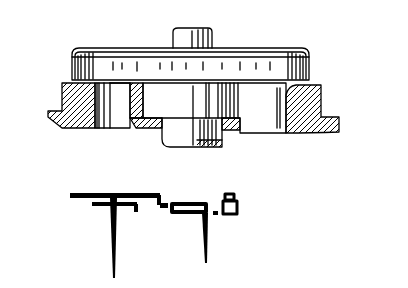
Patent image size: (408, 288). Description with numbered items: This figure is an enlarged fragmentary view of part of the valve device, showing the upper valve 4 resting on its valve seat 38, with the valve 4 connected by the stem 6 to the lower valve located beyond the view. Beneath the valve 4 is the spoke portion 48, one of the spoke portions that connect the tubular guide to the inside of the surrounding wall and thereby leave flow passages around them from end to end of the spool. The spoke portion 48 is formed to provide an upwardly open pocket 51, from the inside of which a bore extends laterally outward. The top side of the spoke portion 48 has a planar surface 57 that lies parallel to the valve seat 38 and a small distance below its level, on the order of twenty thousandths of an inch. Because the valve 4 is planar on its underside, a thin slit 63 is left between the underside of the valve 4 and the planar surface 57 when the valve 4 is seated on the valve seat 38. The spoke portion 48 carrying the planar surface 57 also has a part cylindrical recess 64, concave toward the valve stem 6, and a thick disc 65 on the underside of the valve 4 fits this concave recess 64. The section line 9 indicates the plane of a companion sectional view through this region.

The valve 4 is at (137, 62).
The stem 6 is at (185, 136).
The section line 9 is at (72, 77).
The valve seat 38 is at (289, 87).
The spoke portion 48 is at (140, 91).
The pocket 51 is at (97, 127).
The planar surface 57 is at (121, 87).
The slit 63 is at (112, 83).
The part cylindrical recess 64 is at (144, 106).
The thick disc 65 is at (238, 108).